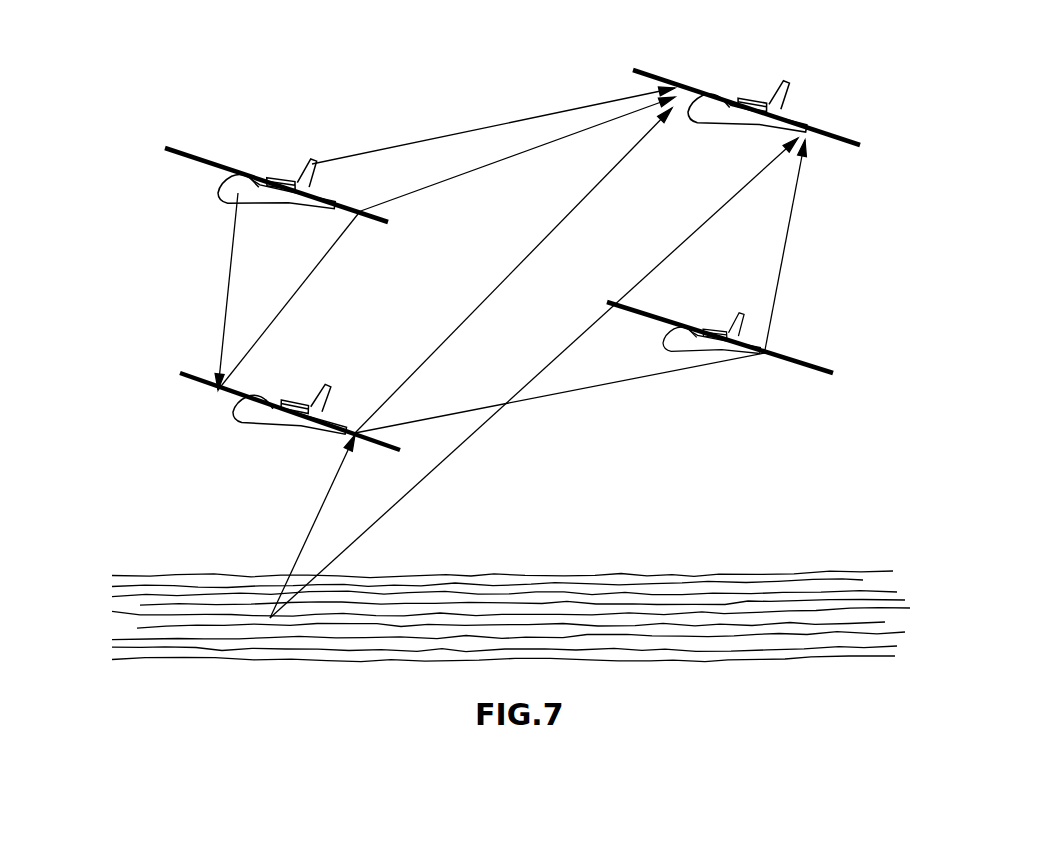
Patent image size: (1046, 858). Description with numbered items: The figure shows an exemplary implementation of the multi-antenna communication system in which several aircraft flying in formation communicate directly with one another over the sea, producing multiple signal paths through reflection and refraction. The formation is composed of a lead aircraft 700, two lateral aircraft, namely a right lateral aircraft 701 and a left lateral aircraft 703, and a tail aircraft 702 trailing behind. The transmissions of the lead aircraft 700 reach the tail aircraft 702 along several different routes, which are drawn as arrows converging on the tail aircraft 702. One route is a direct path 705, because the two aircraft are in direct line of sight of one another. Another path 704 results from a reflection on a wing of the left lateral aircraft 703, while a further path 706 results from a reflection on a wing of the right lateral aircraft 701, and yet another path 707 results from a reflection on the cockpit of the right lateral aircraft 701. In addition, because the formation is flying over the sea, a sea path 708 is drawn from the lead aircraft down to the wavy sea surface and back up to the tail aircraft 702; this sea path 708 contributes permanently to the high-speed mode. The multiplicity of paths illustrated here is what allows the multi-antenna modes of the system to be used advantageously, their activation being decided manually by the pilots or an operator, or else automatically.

The lead aircraft 700 is at (235, 407).
The right lateral aircraft 701 is at (215, 185).
The tail aircraft 702 is at (720, 90).
The left lateral aircraft 703 is at (692, 328).
The path 704 is at (785, 257).
The direct path 705 is at (480, 298).
The path 706 is at (452, 180).
The path 707 is at (421, 144).
The sea path 708 is at (464, 445).